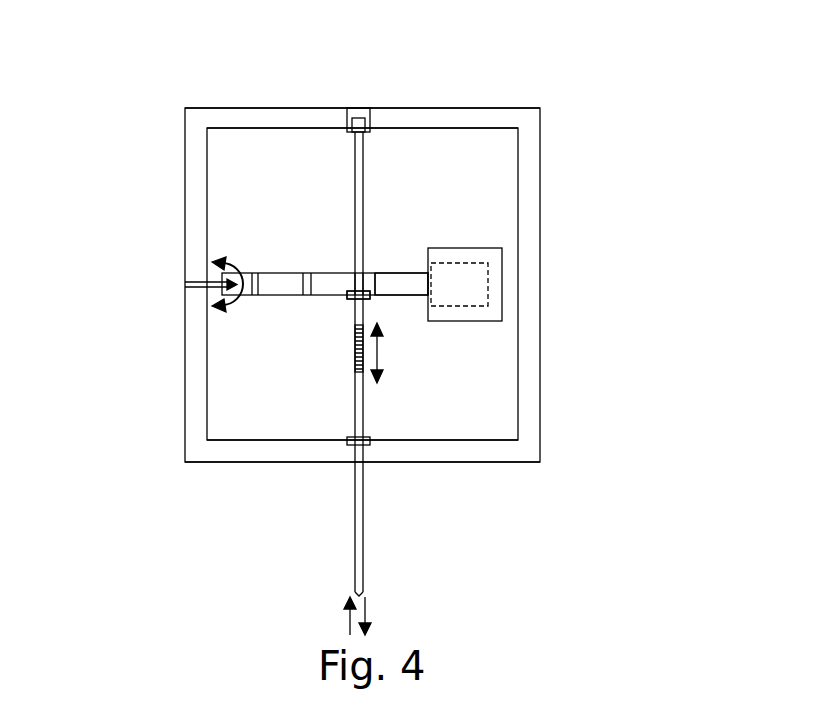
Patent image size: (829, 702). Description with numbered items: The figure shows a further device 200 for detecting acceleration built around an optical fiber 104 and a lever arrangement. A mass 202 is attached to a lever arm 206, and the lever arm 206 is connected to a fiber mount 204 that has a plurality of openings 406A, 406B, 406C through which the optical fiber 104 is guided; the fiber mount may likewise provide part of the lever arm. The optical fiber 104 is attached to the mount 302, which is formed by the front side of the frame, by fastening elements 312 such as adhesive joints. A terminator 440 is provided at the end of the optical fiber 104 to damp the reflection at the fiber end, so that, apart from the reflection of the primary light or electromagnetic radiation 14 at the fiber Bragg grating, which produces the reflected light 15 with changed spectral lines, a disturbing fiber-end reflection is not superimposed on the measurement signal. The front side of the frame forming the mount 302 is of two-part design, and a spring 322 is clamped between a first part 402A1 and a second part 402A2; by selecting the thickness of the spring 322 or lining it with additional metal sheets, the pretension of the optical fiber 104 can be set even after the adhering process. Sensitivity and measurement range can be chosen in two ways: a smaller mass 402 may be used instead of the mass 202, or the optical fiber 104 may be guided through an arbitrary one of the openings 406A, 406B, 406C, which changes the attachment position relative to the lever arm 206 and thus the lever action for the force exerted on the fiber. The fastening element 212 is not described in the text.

The device for detecting acceleration 200 is at (640, 70).
The mount 302 is at (183, 332).
The first part of the front side 402A1 is at (192, 155).
The second part of the front side 402A2 is at (193, 410).
The terminator 440 is at (357, 110).
The optical fiber 104 is at (360, 545).
The fastening element 312 is at (366, 132).
The coupling clamp 212 is at (350, 300).
The fiber mount 204 is at (285, 297).
The opening 406A is at (257, 274).
The opening 406B is at (307, 274).
The opening 406C is at (354, 270).
The lever arm 206 is at (388, 272).
The spring 322 is at (197, 283).
The mass 202 is at (460, 255).
The smaller mass 402 is at (460, 307).
The electromagnetic radiation 14 is at (349, 612).
The reflected light 15 is at (367, 608).